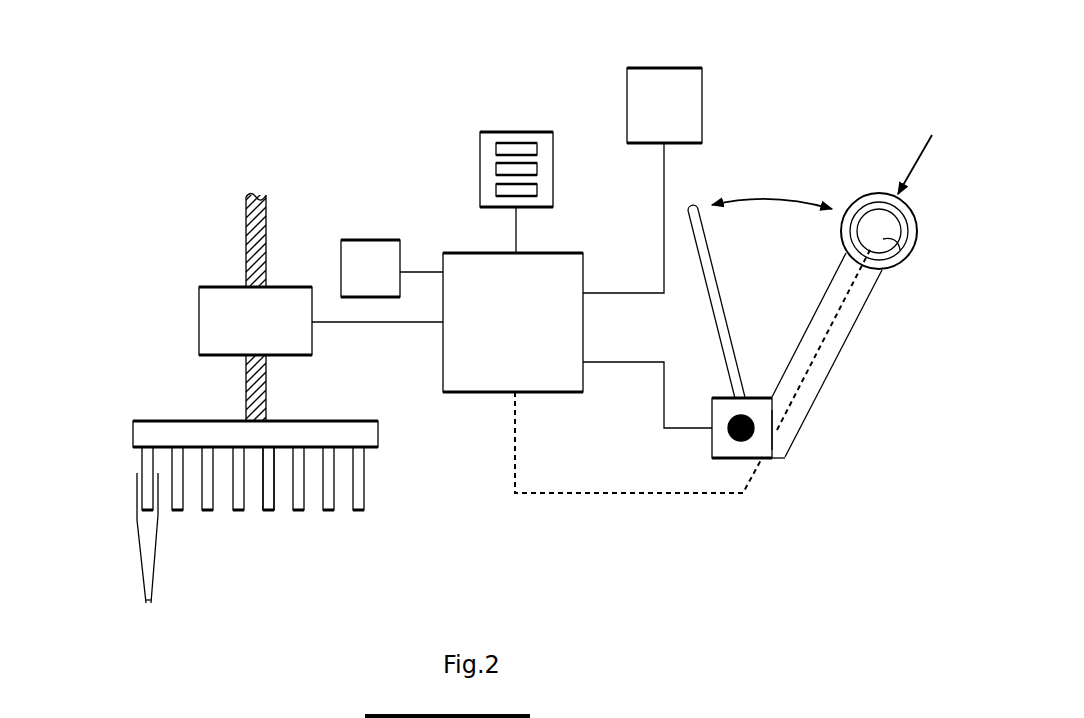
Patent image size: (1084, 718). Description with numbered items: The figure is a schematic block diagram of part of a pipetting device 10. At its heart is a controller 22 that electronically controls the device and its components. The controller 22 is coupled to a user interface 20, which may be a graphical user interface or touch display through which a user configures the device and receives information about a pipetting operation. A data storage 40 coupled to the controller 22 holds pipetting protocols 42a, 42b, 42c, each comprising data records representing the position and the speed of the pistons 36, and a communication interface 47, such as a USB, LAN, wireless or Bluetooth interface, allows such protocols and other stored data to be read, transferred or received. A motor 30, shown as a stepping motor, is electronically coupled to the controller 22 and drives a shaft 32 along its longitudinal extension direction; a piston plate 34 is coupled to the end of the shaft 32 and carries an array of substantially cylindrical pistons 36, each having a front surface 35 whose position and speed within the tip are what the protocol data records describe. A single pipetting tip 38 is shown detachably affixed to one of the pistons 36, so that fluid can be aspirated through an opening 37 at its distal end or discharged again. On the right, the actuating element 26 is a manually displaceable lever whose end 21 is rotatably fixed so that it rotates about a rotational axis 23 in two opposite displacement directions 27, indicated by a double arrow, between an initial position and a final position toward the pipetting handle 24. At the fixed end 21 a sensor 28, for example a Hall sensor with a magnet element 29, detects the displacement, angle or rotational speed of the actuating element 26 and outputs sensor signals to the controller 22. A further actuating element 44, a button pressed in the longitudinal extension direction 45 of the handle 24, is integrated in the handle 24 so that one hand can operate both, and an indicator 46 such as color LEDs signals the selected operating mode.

The pipetting device 10 is at (256, 108).
The user interface 20 is at (702, 104).
The end of the actuating element 21 is at (745, 393).
The controller 22 is at (472, 400).
The rotational axis 23 is at (737, 462).
The pipetting handle 24 is at (868, 326).
The actuating element 26 is at (698, 297).
The displacement directions 27 is at (757, 198).
The sensor 28 is at (778, 444).
The magnet element 29 is at (752, 422).
The motor 30 is at (190, 325).
The shaft 32 is at (245, 210).
The piston plate 34 is at (126, 430).
The front surface 35 is at (208, 511).
The pistons 36 is at (275, 490).
The opening 37 is at (147, 608).
The pipetting tip 38 is at (133, 527).
The data storage 40 is at (470, 185).
The pipetting protocol 42a is at (538, 148).
The pipetting protocol 42b is at (540, 170).
The pipetting protocol 42c is at (531, 197).
The further actuating element 44 is at (897, 270).
The longitudinal extension direction 45 is at (918, 148).
The indicator 46 is at (875, 193).
The communication interface 47 is at (360, 238).